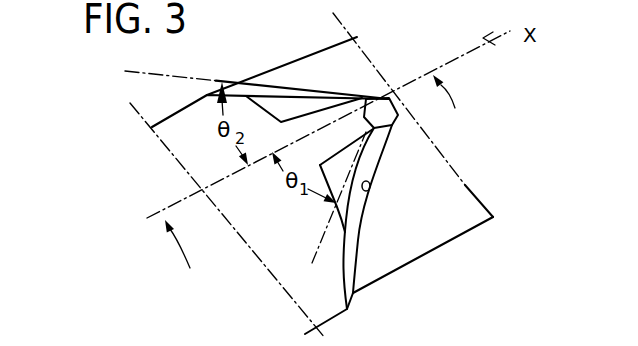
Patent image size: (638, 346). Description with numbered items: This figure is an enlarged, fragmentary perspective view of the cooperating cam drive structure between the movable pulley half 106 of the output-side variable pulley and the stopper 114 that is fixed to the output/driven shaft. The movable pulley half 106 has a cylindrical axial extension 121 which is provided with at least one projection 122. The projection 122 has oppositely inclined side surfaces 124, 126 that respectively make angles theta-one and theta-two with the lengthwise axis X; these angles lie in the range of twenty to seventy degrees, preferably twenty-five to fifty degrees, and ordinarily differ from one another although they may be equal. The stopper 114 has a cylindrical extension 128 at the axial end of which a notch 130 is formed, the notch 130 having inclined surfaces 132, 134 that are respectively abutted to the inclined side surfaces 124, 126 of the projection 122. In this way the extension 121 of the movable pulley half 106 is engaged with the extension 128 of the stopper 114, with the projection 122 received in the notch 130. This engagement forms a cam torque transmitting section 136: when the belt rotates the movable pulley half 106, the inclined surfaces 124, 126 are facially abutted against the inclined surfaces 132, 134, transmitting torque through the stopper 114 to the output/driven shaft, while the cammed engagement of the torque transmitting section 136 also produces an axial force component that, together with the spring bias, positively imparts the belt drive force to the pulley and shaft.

The movable pulley half 106 is at (203, 141).
The stopper 114 is at (537, 92).
The cylindrical axial extension 121 is at (266, 216).
The projection 122 is at (355, 125).
The inclined side surface 124 is at (380, 134).
The inclined side surface 126 is at (361, 98).
The cylindrical extension 128 is at (420, 236).
The notch 130 is at (372, 190).
The inclined surface 132 is at (311, 318).
The inclined surface 134 is at (288, 100).
The cam torque transmitting section 136 is at (428, 262).